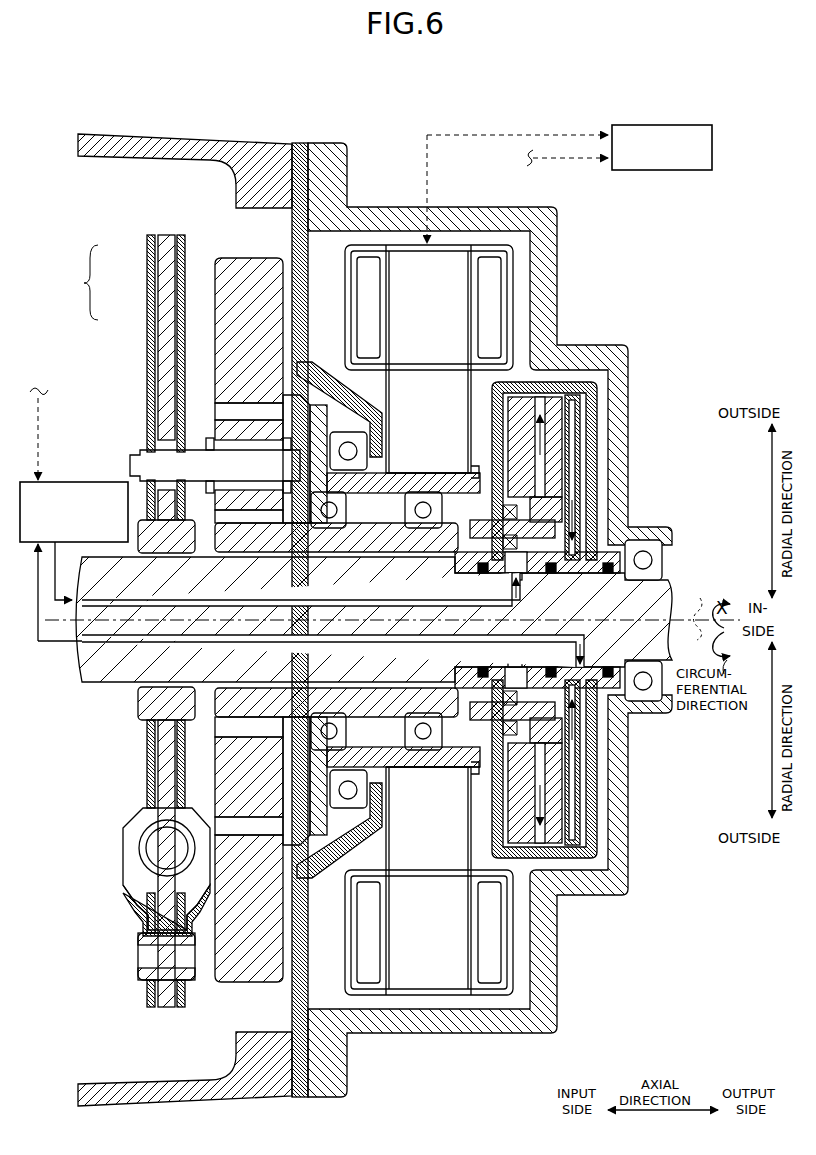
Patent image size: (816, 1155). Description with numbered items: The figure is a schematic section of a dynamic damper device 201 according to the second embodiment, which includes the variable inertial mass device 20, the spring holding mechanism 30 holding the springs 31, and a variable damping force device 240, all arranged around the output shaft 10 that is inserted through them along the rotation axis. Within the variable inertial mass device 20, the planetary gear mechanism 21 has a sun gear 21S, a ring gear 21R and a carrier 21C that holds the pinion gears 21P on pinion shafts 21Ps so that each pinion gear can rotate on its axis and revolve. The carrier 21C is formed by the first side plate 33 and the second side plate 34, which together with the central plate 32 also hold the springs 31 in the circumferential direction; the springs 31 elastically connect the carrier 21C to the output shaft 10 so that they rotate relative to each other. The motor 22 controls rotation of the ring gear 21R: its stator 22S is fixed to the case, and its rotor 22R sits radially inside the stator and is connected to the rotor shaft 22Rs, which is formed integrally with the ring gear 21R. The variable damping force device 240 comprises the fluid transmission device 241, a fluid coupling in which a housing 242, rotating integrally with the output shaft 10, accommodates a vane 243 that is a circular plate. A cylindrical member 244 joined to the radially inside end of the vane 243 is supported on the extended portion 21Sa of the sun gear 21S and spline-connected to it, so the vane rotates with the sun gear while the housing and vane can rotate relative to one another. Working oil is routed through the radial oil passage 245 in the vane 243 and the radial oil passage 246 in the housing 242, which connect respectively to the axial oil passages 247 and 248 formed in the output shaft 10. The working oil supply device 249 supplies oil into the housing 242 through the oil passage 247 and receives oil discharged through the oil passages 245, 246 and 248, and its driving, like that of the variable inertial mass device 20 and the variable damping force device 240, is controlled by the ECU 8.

The dynamic damper device 201 is at (404, 106).
The ECU 8 is at (662, 125).
The variable inertial mass device 20 is at (332, 245).
The motor 22 is at (460, 243).
The stator 22S is at (430, 283).
The rotor 22R is at (430, 390).
The rotor shaft 22Rs is at (445, 462).
The planetary gear mechanism 21 is at (224, 252).
The ring gear 21R is at (247, 257).
The pinion gear 21P is at (249, 418).
The pinion shaft 21Ps is at (195, 465).
The carrier 21C is at (111, 621).
The first side plate 33 is at (150, 264).
The second side plate 34 is at (150, 302).
The sun gear 21S is at (235, 683).
The extended portion 21Sa is at (560, 552).
The output shaft 10 is at (667, 577).
The oil passage 247 is at (82, 644).
The oil passage 248 is at (82, 662).
The working oil supply device 249 is at (93, 484).
The variable damping force device 240 is at (606, 433).
The oil passage 245 is at (540, 412).
The oil passage 246 is at (575, 487).
The fluid transmission device 241 is at (600, 773).
The housing 242 is at (600, 836).
The vane 243 is at (566, 812).
The cylindrical member 244 is at (540, 750).
The central plate 32 is at (168, 778).
The spring 31 is at (136, 848).
The spring holding mechanism 30 is at (118, 995).